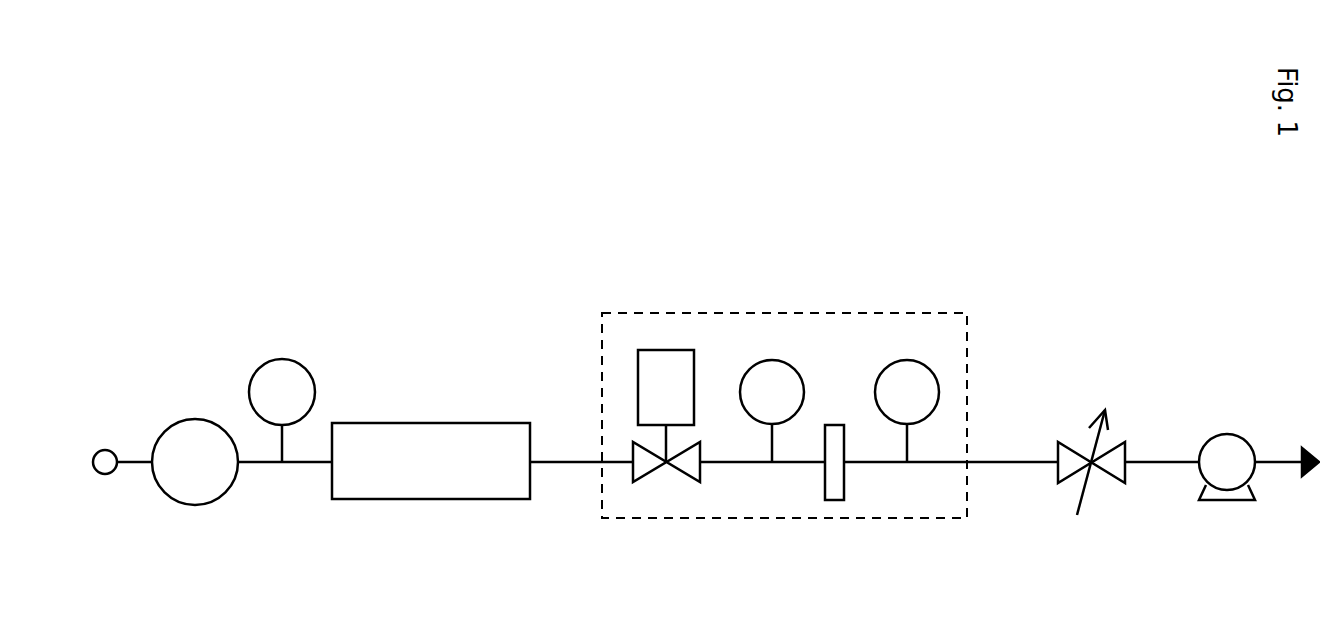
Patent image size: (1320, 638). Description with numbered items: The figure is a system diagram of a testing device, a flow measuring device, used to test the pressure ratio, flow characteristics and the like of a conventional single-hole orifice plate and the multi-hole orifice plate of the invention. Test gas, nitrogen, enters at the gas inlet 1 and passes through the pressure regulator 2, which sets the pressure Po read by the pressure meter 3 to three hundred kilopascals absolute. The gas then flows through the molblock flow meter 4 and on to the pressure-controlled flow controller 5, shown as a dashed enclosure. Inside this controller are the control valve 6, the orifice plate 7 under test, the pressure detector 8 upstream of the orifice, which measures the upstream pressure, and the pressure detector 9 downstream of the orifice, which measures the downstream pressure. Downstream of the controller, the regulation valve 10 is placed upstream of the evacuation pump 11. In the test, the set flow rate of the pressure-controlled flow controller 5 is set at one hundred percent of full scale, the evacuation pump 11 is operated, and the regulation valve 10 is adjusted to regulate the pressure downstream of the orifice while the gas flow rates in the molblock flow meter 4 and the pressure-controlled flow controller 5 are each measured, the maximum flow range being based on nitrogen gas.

The gas inlet 1 is at (107, 450).
The pressure regulator 2 is at (195, 505).
The pressure meter 3 is at (282, 358).
The molblock flow meter 4 is at (428, 422).
The pressure-controlled flow controller 5 is at (770, 312).
The control valve 6 is at (675, 468).
The orifice plate 7 is at (845, 475).
The pressure detector upstream of the orifice 8 is at (793, 365).
The pressure detector downstream of the orifice 9 is at (923, 365).
The regulation valve 10 is at (1107, 477).
The evacuation pump 11 is at (1230, 430).